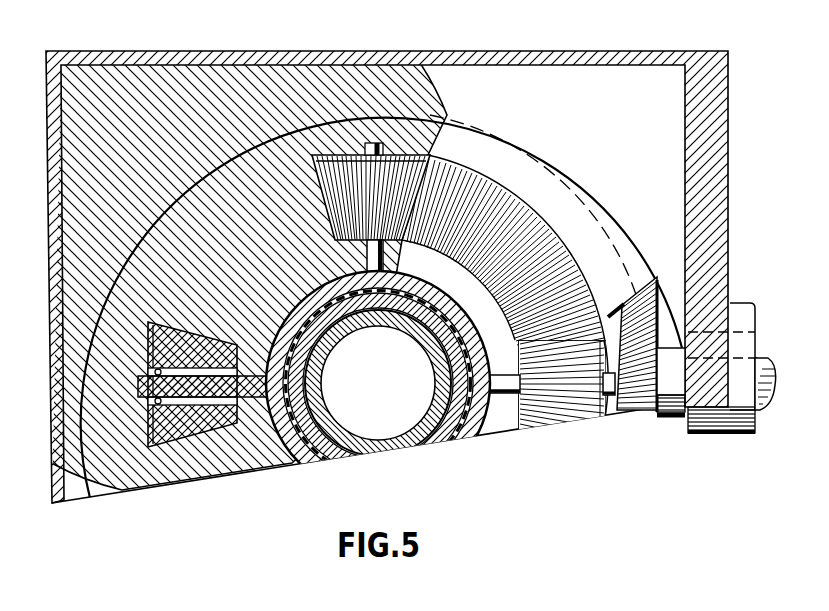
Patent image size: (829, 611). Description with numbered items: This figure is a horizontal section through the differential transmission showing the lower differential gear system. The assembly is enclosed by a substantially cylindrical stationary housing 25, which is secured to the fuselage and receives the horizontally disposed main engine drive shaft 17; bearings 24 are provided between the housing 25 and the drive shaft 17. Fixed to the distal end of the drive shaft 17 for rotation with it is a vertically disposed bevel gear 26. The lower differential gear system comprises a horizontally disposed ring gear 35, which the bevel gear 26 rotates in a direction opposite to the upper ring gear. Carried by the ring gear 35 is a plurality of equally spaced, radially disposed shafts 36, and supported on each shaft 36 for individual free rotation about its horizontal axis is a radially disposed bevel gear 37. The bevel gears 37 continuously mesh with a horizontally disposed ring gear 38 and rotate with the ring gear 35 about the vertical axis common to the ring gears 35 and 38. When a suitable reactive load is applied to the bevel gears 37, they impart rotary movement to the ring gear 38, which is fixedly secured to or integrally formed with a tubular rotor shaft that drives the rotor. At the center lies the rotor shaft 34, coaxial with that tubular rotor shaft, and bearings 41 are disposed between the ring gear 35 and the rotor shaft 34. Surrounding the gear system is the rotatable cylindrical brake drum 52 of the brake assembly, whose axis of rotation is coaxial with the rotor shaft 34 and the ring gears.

The main engine drive shaft 17 is at (762, 358).
The bearings 24 is at (715, 433).
The stationary housing 25 is at (625, 50).
The bevel gear 26 is at (625, 413).
The rotor shaft 34 is at (378, 447).
The ring gear 35 is at (622, 247).
The shafts 36 is at (372, 255).
The bevel gears 37 is at (433, 158).
The ring gear 38 is at (557, 242).
The bearings 41 is at (447, 445).
The brake drum 52 is at (137, 193).